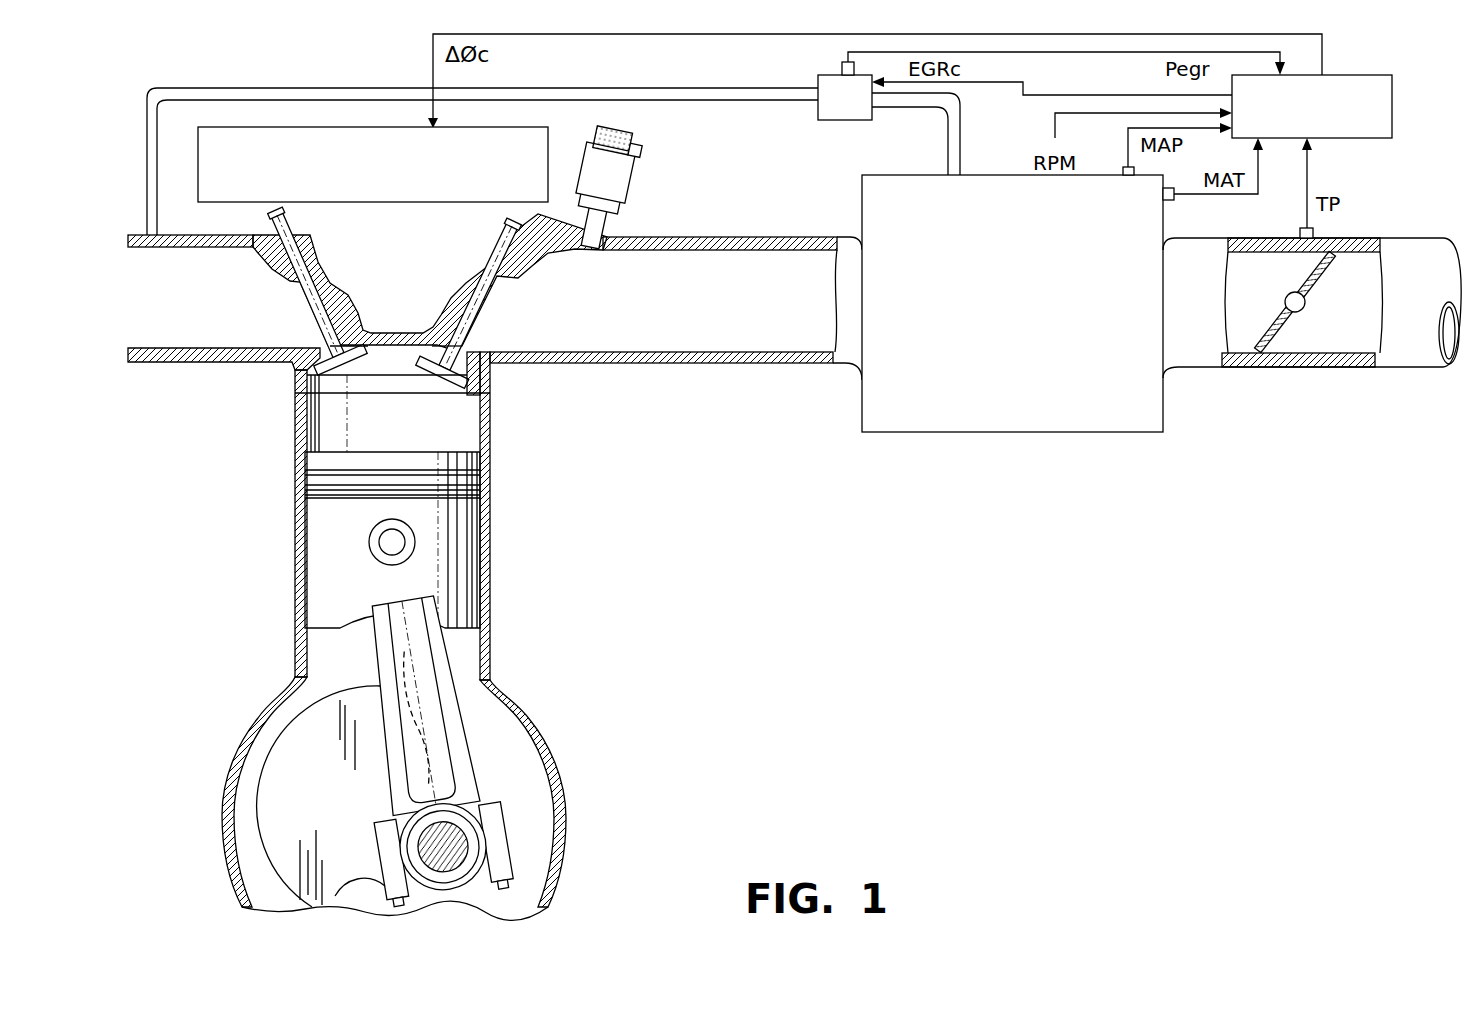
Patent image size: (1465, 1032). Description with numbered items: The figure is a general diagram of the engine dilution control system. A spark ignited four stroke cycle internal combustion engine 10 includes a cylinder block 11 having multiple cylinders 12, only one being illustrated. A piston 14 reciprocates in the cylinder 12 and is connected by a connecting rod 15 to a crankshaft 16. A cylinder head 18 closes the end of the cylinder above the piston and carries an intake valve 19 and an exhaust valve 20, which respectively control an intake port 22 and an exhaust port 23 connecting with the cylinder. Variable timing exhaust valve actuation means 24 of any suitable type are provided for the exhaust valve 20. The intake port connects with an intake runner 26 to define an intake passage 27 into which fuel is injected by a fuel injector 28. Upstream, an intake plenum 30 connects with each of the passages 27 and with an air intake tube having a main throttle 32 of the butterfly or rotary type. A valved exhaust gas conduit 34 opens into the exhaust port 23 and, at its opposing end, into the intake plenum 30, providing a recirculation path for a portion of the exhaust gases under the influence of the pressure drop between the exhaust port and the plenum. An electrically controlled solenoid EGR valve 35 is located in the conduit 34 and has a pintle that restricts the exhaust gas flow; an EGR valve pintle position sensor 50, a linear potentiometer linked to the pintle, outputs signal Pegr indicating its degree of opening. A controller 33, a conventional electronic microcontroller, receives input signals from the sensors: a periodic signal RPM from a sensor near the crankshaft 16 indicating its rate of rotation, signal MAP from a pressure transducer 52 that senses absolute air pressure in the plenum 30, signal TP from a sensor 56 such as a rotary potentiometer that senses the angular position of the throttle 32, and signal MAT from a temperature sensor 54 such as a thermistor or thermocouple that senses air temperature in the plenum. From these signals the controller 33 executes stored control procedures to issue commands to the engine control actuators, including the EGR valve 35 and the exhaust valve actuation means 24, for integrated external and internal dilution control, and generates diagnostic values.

The internal combustion engine 10 is at (385, 292).
The cylinder block 11 is at (295, 507).
The cylinder 12 is at (300, 646).
The piston 14 is at (322, 567).
The connecting rod 15 is at (437, 727).
The crankshaft 16 is at (305, 747).
The cylinder head 18 is at (310, 358).
The intake valve 19 is at (508, 232).
The exhaust valve 20 is at (283, 232).
The intake port 22 is at (473, 343).
The exhaust port 23 is at (208, 343).
The variable timing exhaust valve actuation means 24 is at (548, 140).
The intake runner 26 is at (702, 240).
The intake passage 27 is at (750, 275).
The fuel injector 28 is at (626, 150).
The intake plenum 30 is at (862, 185).
The main throttle 32 is at (1275, 333).
The controller 33 is at (1373, 125).
The valved exhaust gas conduit 34 is at (688, 92).
The EGR valve 35 is at (818, 112).
The EGR valve pintle position sensor 50 is at (840, 68).
The pressure transducer 52 is at (1123, 167).
The temperature sensor 54 is at (1174, 200).
The throttle position sensor 56 is at (1313, 235).